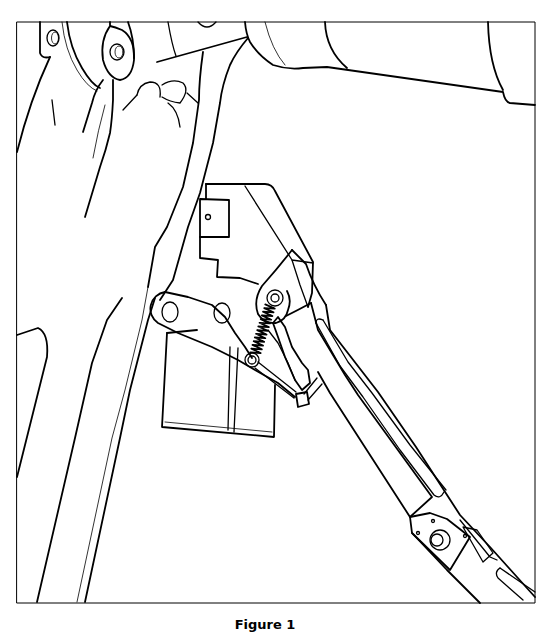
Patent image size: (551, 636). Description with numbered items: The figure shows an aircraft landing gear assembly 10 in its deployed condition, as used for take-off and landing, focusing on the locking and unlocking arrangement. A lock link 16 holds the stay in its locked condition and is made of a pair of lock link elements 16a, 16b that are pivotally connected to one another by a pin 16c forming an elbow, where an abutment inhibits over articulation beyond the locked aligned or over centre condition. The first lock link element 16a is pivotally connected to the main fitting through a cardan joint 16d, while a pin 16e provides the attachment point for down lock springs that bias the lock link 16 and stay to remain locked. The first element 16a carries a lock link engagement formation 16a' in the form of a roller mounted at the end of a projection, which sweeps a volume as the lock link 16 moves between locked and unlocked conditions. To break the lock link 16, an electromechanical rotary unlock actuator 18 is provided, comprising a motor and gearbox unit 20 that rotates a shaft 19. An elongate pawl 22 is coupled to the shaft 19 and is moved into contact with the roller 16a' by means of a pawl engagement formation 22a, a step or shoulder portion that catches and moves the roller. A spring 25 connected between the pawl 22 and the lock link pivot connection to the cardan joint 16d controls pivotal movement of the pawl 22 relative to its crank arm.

The landing gear assembly 10 is at (433, 186).
The lock link 16 is at (424, 443).
The first lock link element 16a is at (381, 408).
The lock link engagement formation 16a' is at (364, 444).
The second lock link element 16b is at (468, 581).
The pin 16c is at (445, 540).
The cardan joint 16d is at (275, 210).
The pin 16e is at (284, 290).
The electromechanical rotary unlock actuator 18 is at (170, 442).
The shaft 19 is at (193, 287).
The motor and gearbox unit 20 is at (240, 412).
The pawl 22 is at (288, 402).
The pawl engagement formation 22a is at (280, 360).
The spring 25 is at (270, 296).